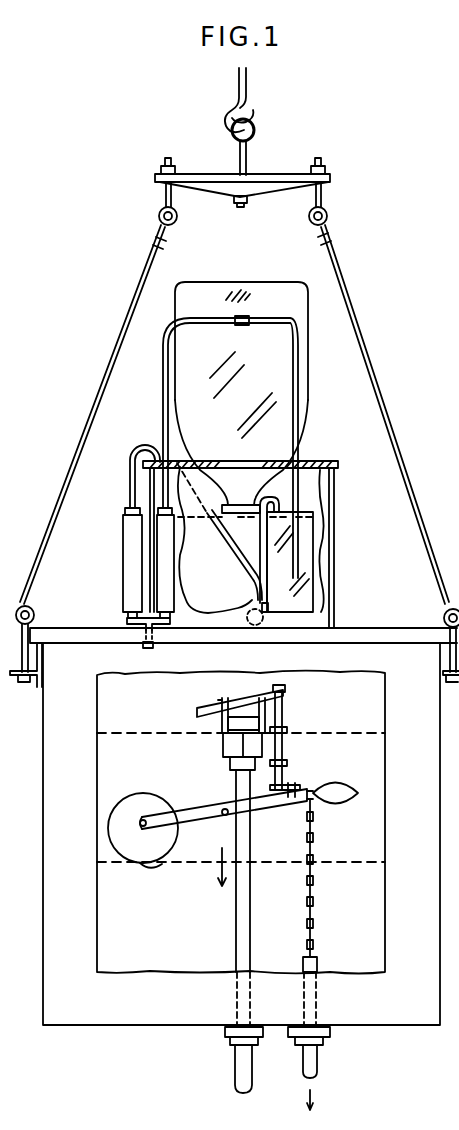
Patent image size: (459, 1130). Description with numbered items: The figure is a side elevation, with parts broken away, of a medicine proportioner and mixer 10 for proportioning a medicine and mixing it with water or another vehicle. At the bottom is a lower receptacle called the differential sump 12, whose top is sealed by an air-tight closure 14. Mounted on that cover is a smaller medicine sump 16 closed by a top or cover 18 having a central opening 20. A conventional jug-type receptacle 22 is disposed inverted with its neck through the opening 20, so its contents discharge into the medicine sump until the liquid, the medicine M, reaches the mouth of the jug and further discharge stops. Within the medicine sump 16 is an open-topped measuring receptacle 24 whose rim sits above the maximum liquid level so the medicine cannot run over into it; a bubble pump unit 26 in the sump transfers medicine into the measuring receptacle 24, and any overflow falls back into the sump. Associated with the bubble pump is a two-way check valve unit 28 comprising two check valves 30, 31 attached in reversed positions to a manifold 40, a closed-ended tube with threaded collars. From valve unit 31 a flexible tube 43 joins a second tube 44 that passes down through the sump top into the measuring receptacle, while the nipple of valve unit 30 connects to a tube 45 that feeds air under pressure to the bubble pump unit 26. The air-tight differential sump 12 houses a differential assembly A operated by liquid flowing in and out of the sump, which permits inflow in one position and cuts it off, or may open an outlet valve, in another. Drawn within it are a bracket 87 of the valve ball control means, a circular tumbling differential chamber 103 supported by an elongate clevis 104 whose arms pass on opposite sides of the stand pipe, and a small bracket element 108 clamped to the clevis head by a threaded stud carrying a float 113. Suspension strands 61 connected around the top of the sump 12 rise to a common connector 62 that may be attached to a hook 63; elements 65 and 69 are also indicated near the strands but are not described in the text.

The medicine proportioner and mixer 10 is at (409, 583).
The differential sump 12 is at (105, 1013).
The air-tight closure 14 is at (63, 632).
The medicine sump 16 is at (335, 490).
The top or cover 18 is at (338, 462).
The central opening 20 is at (288, 461).
The receptacle (jug) 22 is at (235, 292).
The measuring receptacle 24 is at (308, 548).
The bubble pump unit 26 is at (249, 591).
The two-way check valve unit 28 is at (145, 560).
The check valve 30 is at (131, 575).
The check valve 31 is at (173, 585).
The manifold 40 is at (138, 623).
The tube 43 is at (163, 398).
The second tube 44 is at (298, 398).
The tube 45 is at (130, 472).
The suspension strands 61 is at (347, 294).
The common connector 62 is at (276, 180).
The hook 63 is at (250, 83).
The fastener 65 is at (451, 365).
The fastener 69 is at (451, 413).
The bracket 87 is at (210, 729).
The circular tumbling differential chamber 103 is at (107, 797).
The elongate clevis 104 is at (204, 803).
The small bracket element 108 is at (303, 777).
The float 113 is at (338, 785).
The medicine M is at (219, 573).
The differential assembly A is at (163, 785).